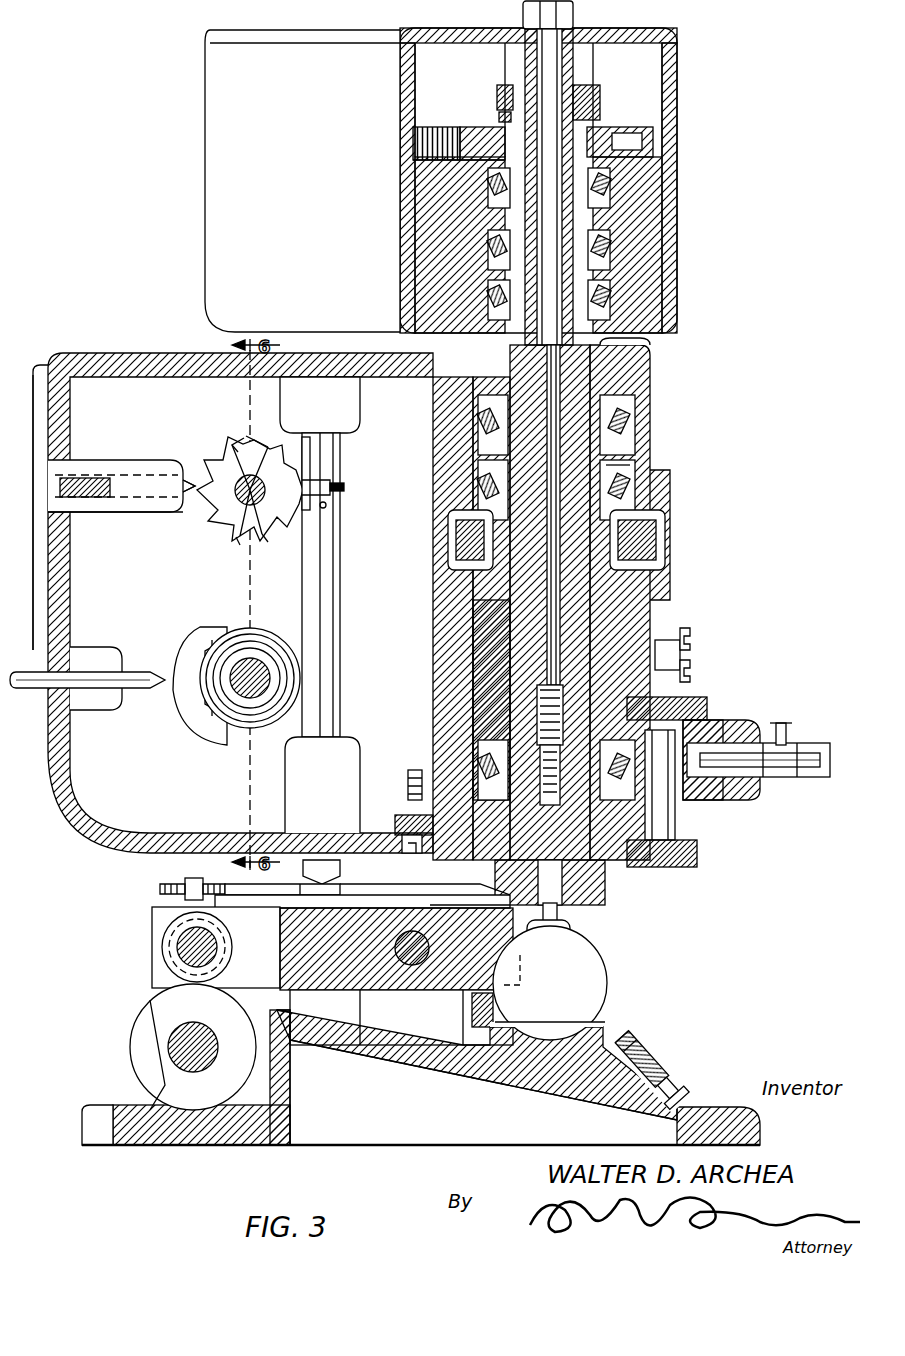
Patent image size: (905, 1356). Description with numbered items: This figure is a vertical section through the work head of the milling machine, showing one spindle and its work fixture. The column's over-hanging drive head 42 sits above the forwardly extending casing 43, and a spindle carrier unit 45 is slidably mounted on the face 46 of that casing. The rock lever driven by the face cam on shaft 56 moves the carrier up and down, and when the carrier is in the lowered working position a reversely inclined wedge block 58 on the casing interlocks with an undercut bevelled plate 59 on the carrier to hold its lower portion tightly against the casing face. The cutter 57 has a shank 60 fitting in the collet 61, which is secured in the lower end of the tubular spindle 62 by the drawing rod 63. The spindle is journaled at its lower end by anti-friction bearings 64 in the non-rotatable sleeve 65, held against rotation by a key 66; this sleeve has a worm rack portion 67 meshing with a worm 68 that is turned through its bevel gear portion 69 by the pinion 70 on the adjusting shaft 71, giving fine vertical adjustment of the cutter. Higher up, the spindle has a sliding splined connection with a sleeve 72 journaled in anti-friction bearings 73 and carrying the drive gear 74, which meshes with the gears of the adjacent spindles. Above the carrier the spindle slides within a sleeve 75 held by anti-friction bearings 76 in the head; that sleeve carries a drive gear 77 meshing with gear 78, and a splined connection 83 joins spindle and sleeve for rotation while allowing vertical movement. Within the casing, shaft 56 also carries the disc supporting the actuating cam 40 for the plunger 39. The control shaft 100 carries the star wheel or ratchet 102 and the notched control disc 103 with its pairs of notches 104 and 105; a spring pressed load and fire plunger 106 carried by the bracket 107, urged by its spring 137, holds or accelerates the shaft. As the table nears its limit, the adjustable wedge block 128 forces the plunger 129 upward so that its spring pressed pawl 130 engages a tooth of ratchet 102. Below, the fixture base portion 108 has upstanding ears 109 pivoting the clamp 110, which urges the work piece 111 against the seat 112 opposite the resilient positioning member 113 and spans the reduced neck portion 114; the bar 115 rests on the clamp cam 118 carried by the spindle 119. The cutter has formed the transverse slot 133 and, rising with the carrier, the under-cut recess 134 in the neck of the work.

The plunger 39 is at (160, 674).
The actuating cam 40 is at (176, 708).
The over-hanging head 42 is at (677, 86).
The casing 43 is at (140, 341).
The spindle carrier unit 45 is at (433, 606).
The face of the casing 46 is at (400, 330).
The shaft 56 is at (262, 735).
The cutter 57 is at (572, 933).
The wedge block 58 is at (405, 806).
The undercut bevelled plate 59 is at (408, 783).
The shank 60 is at (565, 899).
The collet 61 is at (552, 900).
The tubular spindle 62 is at (596, 356).
The drawing rod 63 is at (574, 30).
The anti-friction bearings 64 is at (660, 706).
The sleeve 65 is at (473, 656).
The key 66 is at (656, 666).
The worm rack portion 67 is at (636, 868).
The worm 68 is at (718, 802).
The bevel gear portion 69 is at (700, 722).
The pinion 70 is at (778, 724).
The adjusting shaft 71 is at (830, 760).
The sleeve 72 is at (622, 462).
The anti-friction bearings 73 is at (622, 432).
The drive gear 74 is at (662, 540).
The sleeve 75 is at (612, 228).
The anti-friction bearings 76 is at (612, 188).
The drive gear 77 is at (620, 133).
The gear 78 is at (436, 130).
The key or splined connection 83 is at (598, 102).
The shaft 100 is at (216, 456).
The star wheel or ratchet 102 is at (240, 545).
The notched control disc 103 is at (274, 542).
The notch 104 is at (240, 442).
The notch 105 is at (252, 432).
The load and fire plunger 106 is at (193, 500).
The bracket 107 is at (142, 514).
The base portion 108 is at (268, 1146).
The upstanding ears 109 is at (430, 885).
The clamp 110 is at (153, 936).
The work piece 111 is at (598, 980).
The seat 112 is at (473, 1018).
The resilient positioning member 113 is at (624, 1030).
The reduced neck portion 114 is at (580, 943).
The bar 115 is at (220, 946).
The clamp cam 118 is at (150, 1014).
The spindle 119 is at (216, 1064).
The adjustable cam or wedge block 128 is at (212, 878).
The plunger 129 is at (335, 562).
The spring pressed pawl 130 is at (346, 490).
The slot 133 is at (576, 940).
The under-cut recess 134 is at (500, 905).
The spring 137 is at (110, 472).